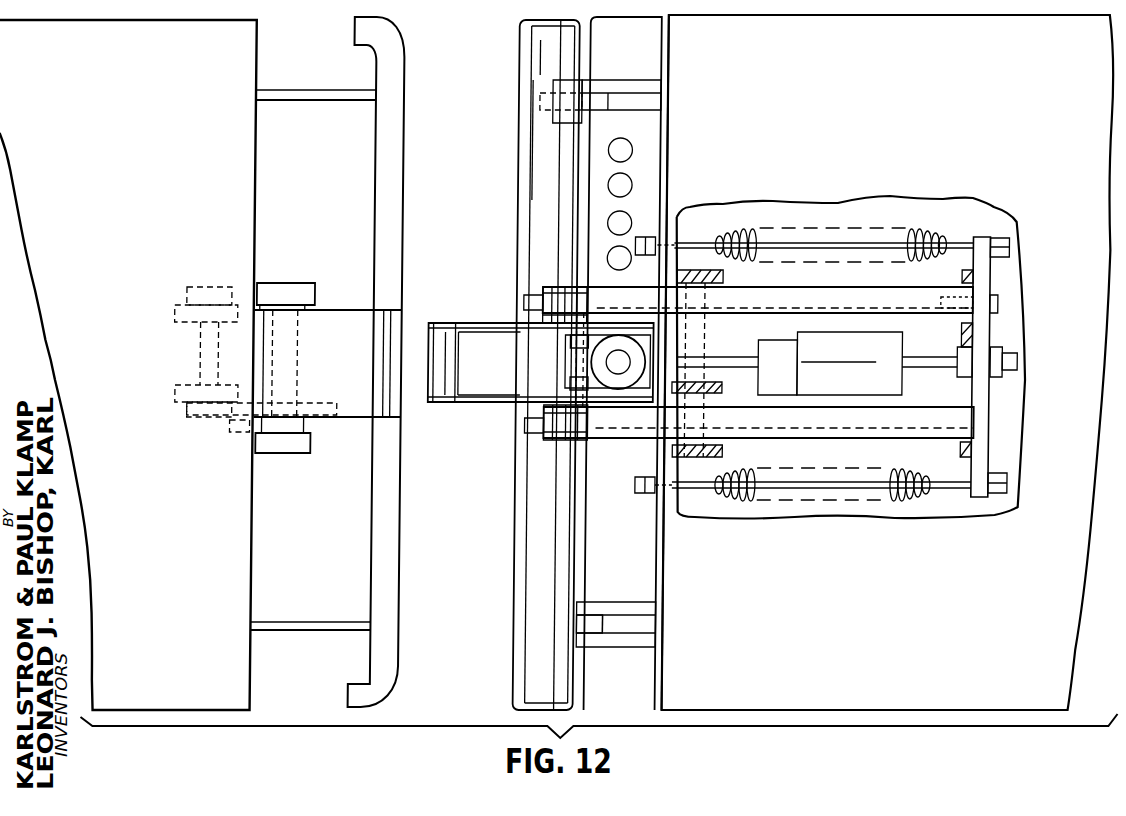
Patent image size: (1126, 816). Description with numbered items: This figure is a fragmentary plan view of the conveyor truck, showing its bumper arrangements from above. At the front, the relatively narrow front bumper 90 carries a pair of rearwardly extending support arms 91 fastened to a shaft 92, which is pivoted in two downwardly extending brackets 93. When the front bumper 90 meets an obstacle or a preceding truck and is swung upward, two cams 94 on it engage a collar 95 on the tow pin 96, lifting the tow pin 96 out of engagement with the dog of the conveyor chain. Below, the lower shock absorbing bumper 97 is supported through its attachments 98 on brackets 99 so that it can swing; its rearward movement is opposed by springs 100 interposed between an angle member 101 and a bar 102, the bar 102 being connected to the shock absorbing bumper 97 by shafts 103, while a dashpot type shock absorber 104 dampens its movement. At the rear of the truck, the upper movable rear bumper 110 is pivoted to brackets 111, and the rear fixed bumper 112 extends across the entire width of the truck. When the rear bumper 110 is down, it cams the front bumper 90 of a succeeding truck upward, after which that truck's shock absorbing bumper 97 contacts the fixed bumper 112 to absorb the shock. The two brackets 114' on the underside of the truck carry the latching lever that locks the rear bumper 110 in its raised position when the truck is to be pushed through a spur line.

The front bumper 90 is at (434, 325).
The support arms 91 is at (472, 323).
The shaft 92 is at (709, 378).
The brackets 93 is at (727, 277).
The cams 94 is at (572, 338).
The collar 95 is at (618, 388).
The tow pin 96 is at (610, 358).
The lower shock absorbing bumper 97 is at (520, 175).
The attachments 98 is at (588, 98).
The brackets 99 is at (618, 88).
The springs 100 is at (825, 497).
The angle member 101 is at (667, 157).
The bar 102 is at (981, 258).
The shafts 103 is at (846, 294).
The dashpot type shock absorber 104 is at (902, 378).
The upper movable rear bumper 110 is at (342, 317).
The brackets 111 is at (291, 294).
The rear fixed bumper 112 is at (378, 182).
The brackets 114' is at (218, 359).